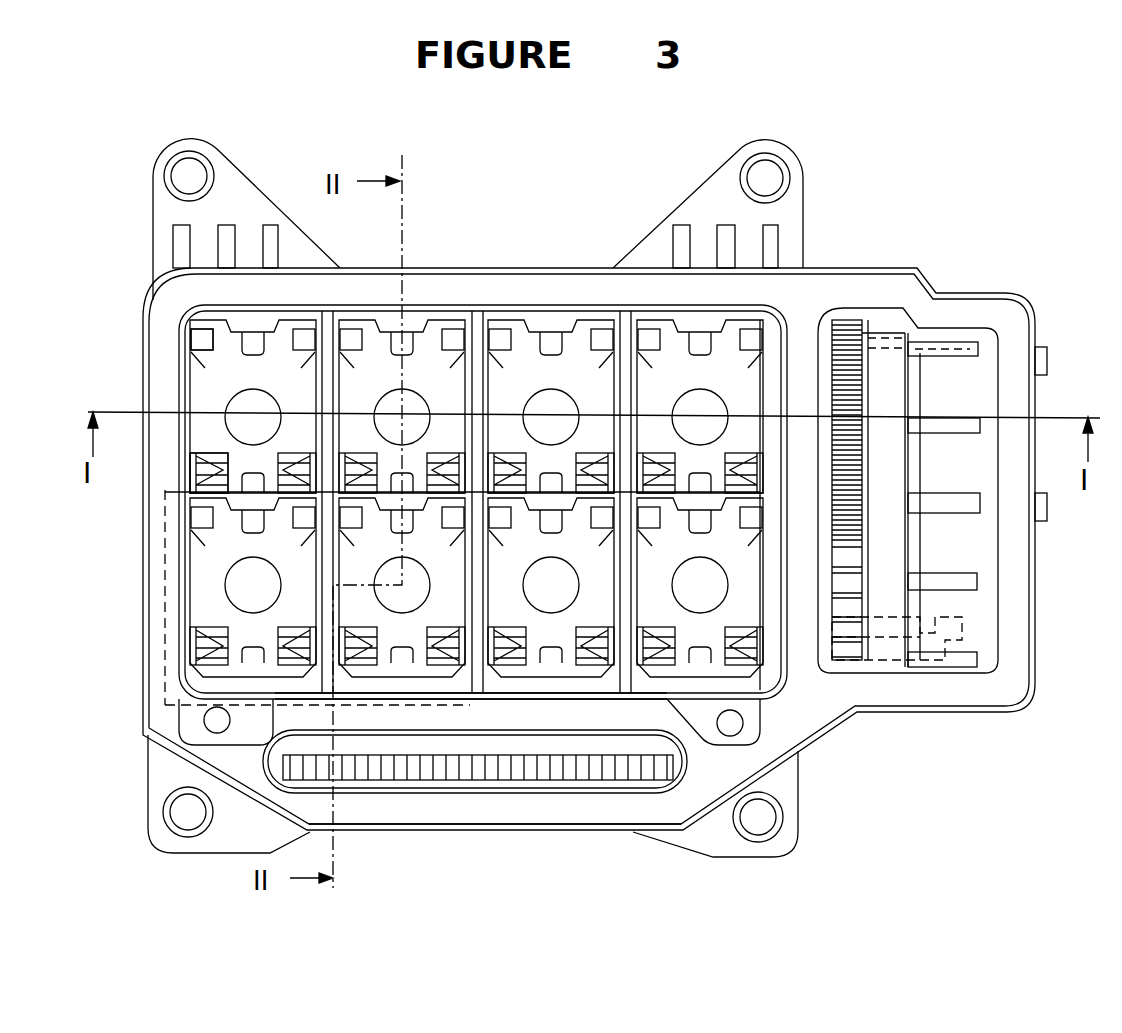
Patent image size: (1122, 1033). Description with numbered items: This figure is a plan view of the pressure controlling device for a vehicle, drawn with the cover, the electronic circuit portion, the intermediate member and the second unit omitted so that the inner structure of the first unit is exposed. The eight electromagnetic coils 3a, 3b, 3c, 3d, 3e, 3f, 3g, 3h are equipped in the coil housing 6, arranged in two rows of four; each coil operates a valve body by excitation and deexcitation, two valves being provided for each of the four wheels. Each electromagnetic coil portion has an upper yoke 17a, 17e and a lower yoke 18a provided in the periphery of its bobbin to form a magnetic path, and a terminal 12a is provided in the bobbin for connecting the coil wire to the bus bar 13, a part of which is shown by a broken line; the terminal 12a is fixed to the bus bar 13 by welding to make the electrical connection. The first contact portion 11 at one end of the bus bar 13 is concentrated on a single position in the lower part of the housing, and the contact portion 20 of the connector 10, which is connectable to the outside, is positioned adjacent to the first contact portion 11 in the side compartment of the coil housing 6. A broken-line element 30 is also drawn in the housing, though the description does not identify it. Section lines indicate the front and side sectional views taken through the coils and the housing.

The electromagnetic coil 3a is at (300, 323).
The electromagnetic coil 3b is at (430, 325).
The electromagnetic coil 3c is at (505, 328).
The electromagnetic coil 3d is at (738, 327).
The electromagnetic coil 3e is at (204, 720).
The electromagnetic coil 3f is at (437, 703).
The electromagnetic coil 3g is at (528, 673).
The electromagnetic coil 3h is at (727, 683).
The coil housing 6 is at (970, 292).
The connector 10 is at (950, 638).
The first contact portion 11 is at (600, 773).
The terminal 12a is at (200, 457).
The bus bar 13 is at (617, 775).
The upper yoke 17a is at (217, 380).
The upper yoke 17e is at (210, 557).
The lower yoke 18a is at (197, 340).
The contact portion 20 is at (848, 650).
The cover plate 30 is at (165, 655).